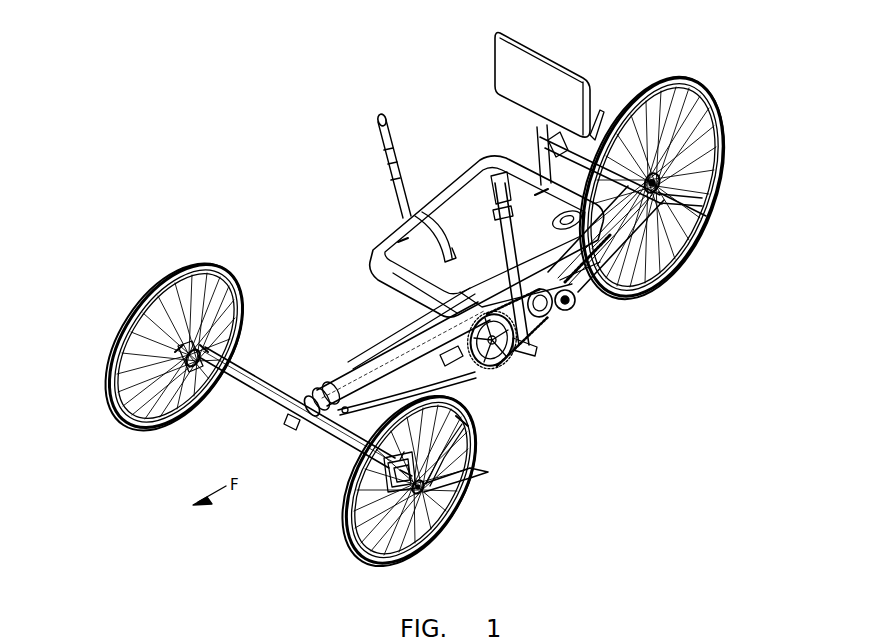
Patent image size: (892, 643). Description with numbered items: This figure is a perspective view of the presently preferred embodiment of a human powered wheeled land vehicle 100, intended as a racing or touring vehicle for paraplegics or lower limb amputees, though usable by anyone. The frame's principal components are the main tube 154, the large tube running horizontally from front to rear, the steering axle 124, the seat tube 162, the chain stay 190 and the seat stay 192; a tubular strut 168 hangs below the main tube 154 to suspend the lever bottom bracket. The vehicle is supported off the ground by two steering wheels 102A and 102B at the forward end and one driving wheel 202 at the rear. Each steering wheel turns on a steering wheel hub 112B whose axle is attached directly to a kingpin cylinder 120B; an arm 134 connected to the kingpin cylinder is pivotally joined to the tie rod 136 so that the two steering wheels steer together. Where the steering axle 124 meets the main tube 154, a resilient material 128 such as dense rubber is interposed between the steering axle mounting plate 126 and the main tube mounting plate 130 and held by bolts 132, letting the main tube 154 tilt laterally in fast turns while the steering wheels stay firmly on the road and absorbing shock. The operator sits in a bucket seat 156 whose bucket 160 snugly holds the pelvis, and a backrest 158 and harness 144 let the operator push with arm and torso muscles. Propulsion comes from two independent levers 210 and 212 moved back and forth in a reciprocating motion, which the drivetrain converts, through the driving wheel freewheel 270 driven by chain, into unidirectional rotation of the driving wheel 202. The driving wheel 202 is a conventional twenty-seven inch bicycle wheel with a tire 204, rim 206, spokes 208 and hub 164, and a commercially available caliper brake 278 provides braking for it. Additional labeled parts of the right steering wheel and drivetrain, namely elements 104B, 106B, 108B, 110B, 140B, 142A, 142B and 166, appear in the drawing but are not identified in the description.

The human powered wheeled land vehicle 100 is at (645, 41).
The steering wheel 102A is at (126, 418).
The steering wheel 102B is at (410, 483).
The tire 104B is at (381, 560).
The rim 106B is at (420, 543).
The axle 108B is at (488, 474).
The hub 110B is at (425, 490).
The steering wheel hub 112B is at (346, 512).
The kingpin cylinder 120B is at (346, 497).
The steering axle 124 is at (328, 453).
The steering axle mounting plate 126 is at (310, 396).
The resilient material 128 is at (316, 388).
The main tube mounting plate 130 is at (326, 384).
The bolts 132 is at (294, 422).
The arm 134 is at (442, 455).
The tie rod 136 is at (464, 420).
The brake cable 140B is at (348, 407).
The drive rod 142A is at (388, 343).
The drive sprocket 142B is at (472, 370).
The harness 144 is at (482, 182).
The main tube 154 is at (433, 333).
The seat 156 is at (487, 217).
The backrest 158 is at (566, 54).
The bucket 160 is at (491, 253).
The seat tube 162 is at (541, 158).
The hub 164 is at (715, 158).
The rear strut 166 is at (706, 216).
The tubular strut 168 is at (452, 362).
The chain stay 190 is at (632, 258).
The seat stay 192 is at (657, 78).
The driving wheel 202 is at (687, 184).
The tire 204 is at (690, 250).
The rim 206 is at (702, 206).
The spokes 208 is at (702, 198).
The lever 210 is at (397, 118).
The lever 212 is at (594, 285).
The driving wheel freewheel 270 is at (693, 146).
The caliper brake 278 is at (601, 108).